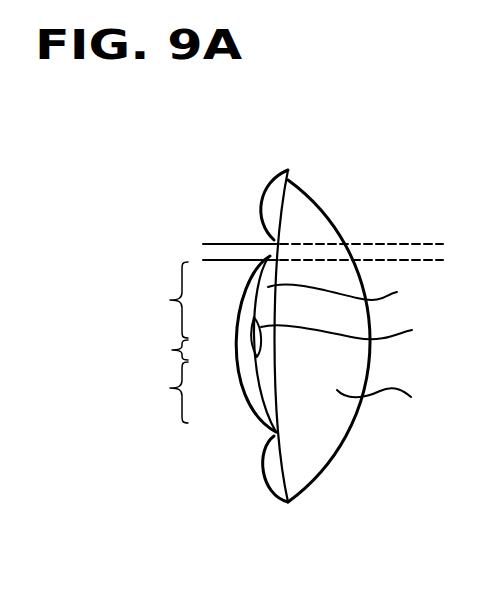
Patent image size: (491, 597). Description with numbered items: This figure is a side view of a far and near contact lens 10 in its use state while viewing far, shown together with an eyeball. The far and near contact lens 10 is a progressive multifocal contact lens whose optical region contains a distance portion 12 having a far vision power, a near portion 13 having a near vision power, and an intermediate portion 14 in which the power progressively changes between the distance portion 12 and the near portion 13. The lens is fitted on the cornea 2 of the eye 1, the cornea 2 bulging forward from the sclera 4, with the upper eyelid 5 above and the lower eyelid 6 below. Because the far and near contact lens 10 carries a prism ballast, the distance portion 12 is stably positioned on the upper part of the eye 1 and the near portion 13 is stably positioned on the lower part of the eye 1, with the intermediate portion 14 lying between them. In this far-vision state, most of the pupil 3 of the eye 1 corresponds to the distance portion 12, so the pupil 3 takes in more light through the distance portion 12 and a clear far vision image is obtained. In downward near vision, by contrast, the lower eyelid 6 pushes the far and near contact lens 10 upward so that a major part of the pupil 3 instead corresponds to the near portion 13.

The eye 1 is at (352, 222).
The cornea 2 is at (340, 290).
The pupil 3 is at (340, 337).
The sclera 4 is at (382, 398).
The upper eyelid 5 is at (262, 194).
The lower eyelid 6 is at (268, 491).
The far and near contact lens 10 is at (246, 401).
The distance portion 12 is at (163, 300).
The near portion 13 is at (163, 392).
The intermediate portion 14 is at (163, 350).